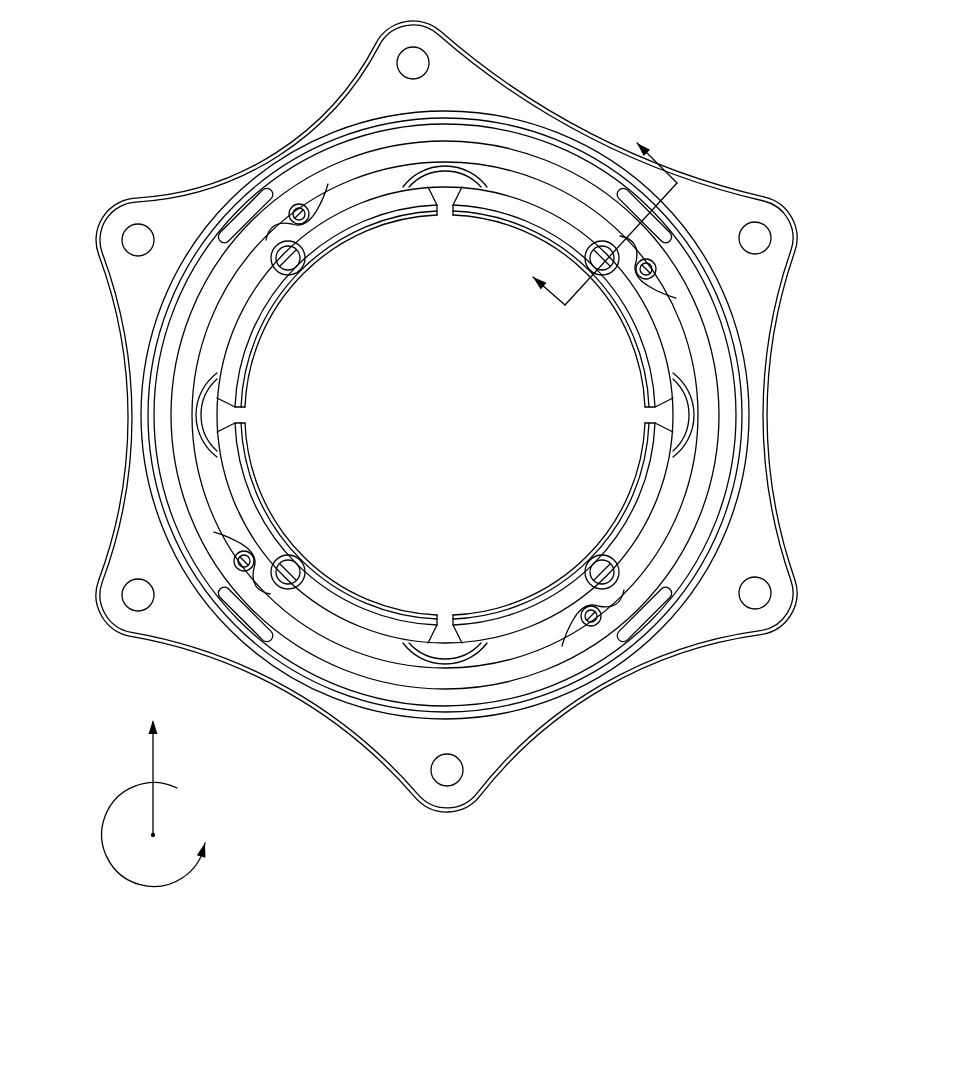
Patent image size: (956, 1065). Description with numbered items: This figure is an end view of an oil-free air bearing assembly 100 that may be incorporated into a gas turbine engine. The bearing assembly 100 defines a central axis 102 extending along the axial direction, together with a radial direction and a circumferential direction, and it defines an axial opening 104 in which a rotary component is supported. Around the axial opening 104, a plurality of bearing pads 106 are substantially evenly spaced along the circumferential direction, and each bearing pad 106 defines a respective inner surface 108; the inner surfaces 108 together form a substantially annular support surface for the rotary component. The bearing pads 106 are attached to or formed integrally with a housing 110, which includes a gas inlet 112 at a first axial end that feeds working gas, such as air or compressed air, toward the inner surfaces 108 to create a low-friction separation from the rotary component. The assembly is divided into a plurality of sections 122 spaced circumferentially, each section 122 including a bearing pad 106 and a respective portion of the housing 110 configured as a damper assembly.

The bearing assembly 100 is at (690, 60).
The central axis 102 is at (490, 420).
The axial opening 104 is at (593, 487).
The bearing pad 106 is at (352, 247).
The inner surface 108 is at (267, 330).
The housing 110 is at (200, 518).
The gas inlet 112 is at (238, 213).
The section 122 is at (337, 183).